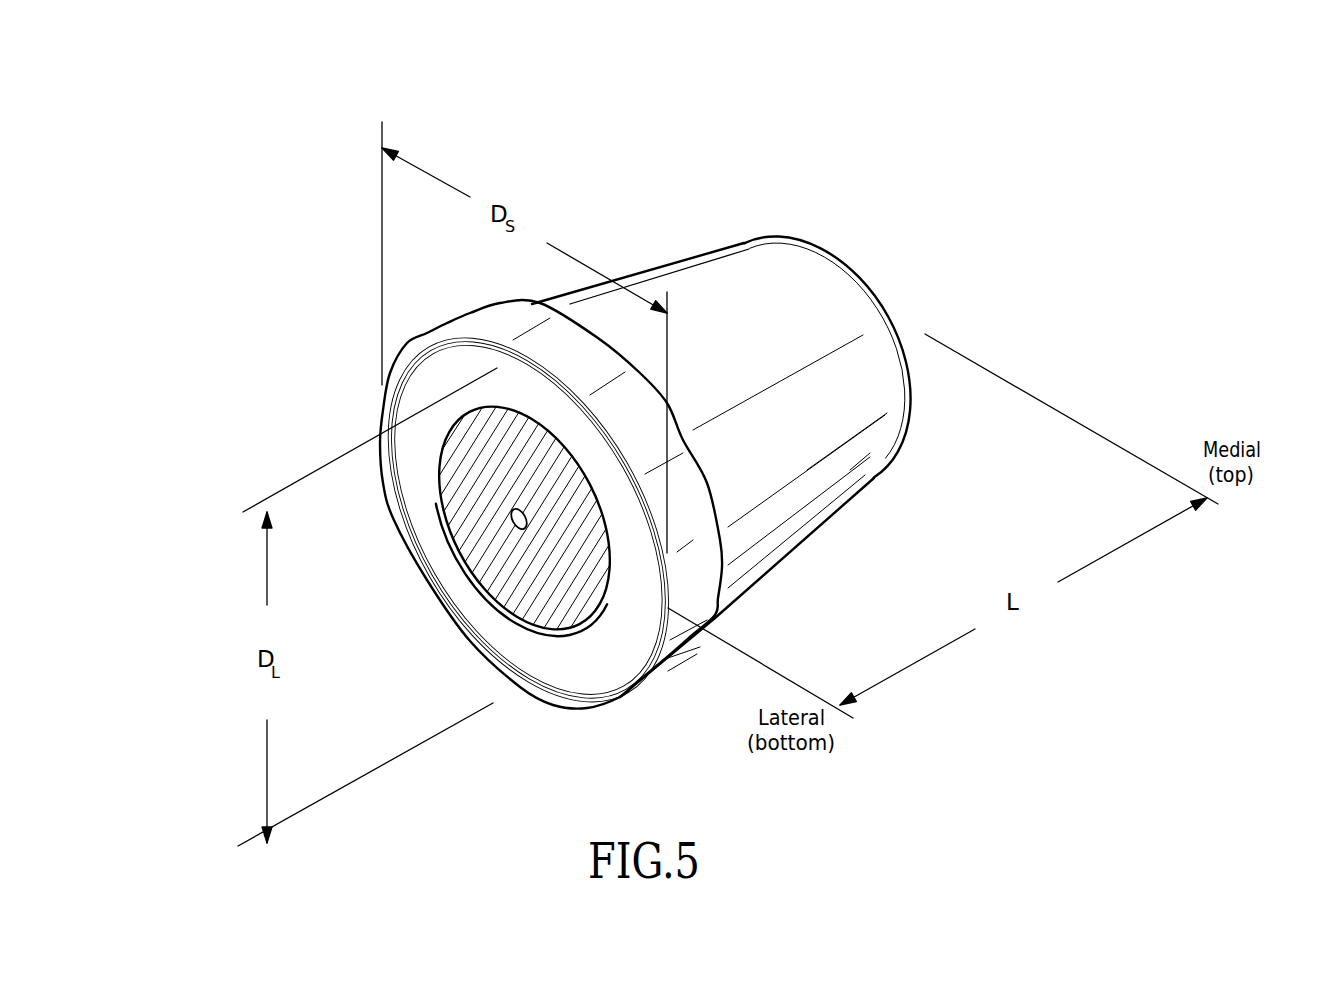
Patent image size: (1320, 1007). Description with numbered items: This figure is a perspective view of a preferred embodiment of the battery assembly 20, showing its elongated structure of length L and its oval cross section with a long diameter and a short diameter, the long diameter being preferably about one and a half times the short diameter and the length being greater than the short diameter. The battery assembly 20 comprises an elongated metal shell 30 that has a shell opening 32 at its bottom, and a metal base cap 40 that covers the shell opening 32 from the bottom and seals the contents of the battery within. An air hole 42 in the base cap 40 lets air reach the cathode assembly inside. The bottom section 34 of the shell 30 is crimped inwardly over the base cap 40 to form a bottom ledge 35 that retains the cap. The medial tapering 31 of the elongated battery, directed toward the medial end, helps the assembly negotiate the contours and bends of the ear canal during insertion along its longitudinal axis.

The battery assembly 20 is at (669, 238).
The elongated metal shell 30 is at (600, 302).
The medial tapering 31 is at (826, 250).
The shell opening 32 is at (566, 598).
The bottom section 34 is at (623, 717).
The bottom ledge 35 is at (463, 610).
The metal base cap 40 is at (458, 480).
The air hole 42 is at (516, 528).